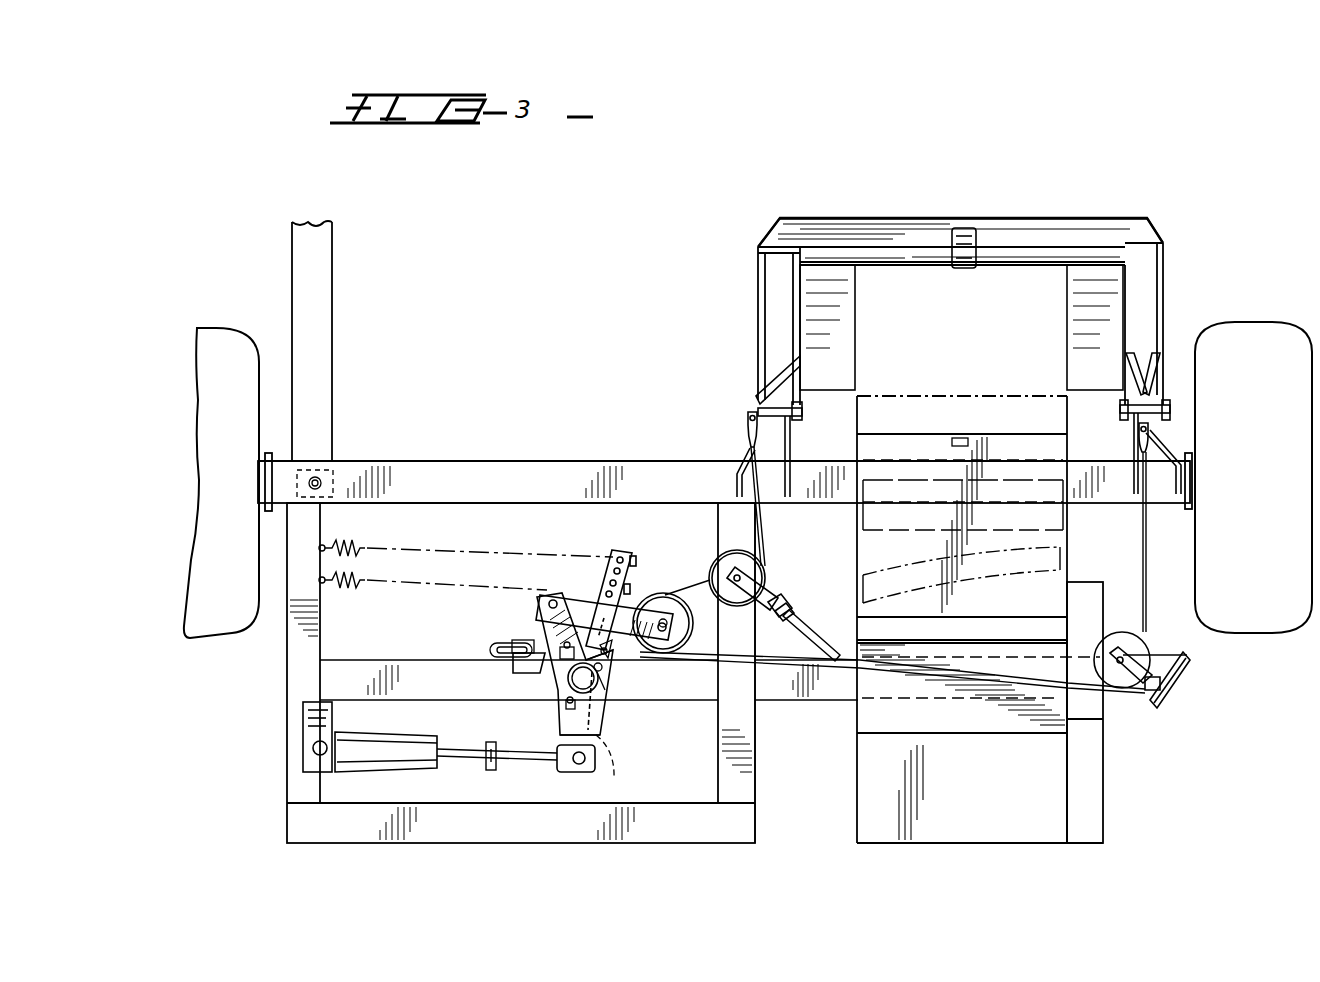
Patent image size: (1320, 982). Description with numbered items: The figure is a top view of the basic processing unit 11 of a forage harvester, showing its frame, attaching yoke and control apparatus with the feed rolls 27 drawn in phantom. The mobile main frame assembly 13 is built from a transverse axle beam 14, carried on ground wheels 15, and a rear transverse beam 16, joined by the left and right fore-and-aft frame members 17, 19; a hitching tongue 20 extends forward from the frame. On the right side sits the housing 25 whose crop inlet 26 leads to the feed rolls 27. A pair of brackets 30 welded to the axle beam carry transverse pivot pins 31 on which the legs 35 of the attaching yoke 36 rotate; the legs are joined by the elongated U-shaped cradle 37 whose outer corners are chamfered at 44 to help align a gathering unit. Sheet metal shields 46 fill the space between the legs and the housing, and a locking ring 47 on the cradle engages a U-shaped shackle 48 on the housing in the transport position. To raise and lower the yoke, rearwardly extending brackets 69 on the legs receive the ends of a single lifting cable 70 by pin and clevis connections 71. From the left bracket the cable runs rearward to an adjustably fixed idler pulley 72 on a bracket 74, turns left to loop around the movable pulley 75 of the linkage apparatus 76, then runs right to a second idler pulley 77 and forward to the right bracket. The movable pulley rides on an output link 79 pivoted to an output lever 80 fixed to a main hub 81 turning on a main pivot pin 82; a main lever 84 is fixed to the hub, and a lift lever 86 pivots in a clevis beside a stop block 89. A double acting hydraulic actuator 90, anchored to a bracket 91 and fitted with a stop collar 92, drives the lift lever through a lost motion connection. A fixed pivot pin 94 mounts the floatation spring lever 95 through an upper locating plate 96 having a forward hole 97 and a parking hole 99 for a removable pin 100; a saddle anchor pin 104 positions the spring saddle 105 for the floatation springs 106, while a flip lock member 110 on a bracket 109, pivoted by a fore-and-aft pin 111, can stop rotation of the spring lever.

The basic processing unit 11 is at (850, 782).
The mobile main frame assembly 13 is at (618, 461).
The transverse axle beam 14 is at (537, 461).
The ground wheels 15 is at (214, 336).
The rear transverse beam 16 is at (785, 700).
The left fore-and-aft frame member 17 is at (288, 672).
The right fore-and-aft frame member 19 is at (756, 778).
The hitching tongue 20 is at (333, 379).
The housing 25 is at (1068, 551).
The crop inlet 26 is at (1062, 419).
The feed rolls 27 is at (930, 388).
The brackets 30 is at (746, 457).
The transverse pivot pins 31 is at (812, 414).
The legs 35 is at (757, 305).
The attaching yoke 36 is at (1002, 215).
The cradle 37 is at (870, 218).
The chamfered corners 44 is at (767, 227).
The sheet metal shields 46 is at (856, 305).
The locking ring 47 is at (990, 268).
The U-shaped shackle 48 is at (958, 438).
The rearwardly extending brackets 69 is at (756, 385).
The lifting cable 70 is at (766, 535).
The pin and clevis connections 71 is at (748, 432).
The adjustably fixed idler pulley 72 is at (767, 582).
The bracket 74 is at (812, 632).
The movable pulley 75 is at (666, 598).
The linkage apparatus 76 is at (522, 540).
The second adjustably fixed idler pulley 77 is at (1133, 704).
The output link 79 is at (640, 598).
The output lever 80 is at (546, 598).
The main hub 81 is at (572, 691).
The main pivot pin 82 is at (570, 712).
The main lever 84 is at (606, 737).
The lift lever 86 is at (578, 772).
The stop block 89 is at (614, 765).
The double acting hydraulic actuator 90 is at (356, 735).
The bracket 91 is at (302, 733).
The stop collar 92 is at (491, 770).
The fixed pivot pin 94 is at (565, 666).
The floatation spring lever 95 is at (597, 592).
The upper locating plate 96 is at (608, 707).
The forward hole 97 is at (606, 657).
The parking hole 99 is at (608, 691).
The removable pin 100 is at (628, 659).
The saddle anchor pin 104 is at (612, 575).
The spring saddle 105 is at (629, 562).
The floatation springs 106 is at (356, 561).
The bracket 109 is at (512, 665).
The flip lock member 110 is at (490, 648).
The fore-and-aft extending pin 111 is at (522, 640).